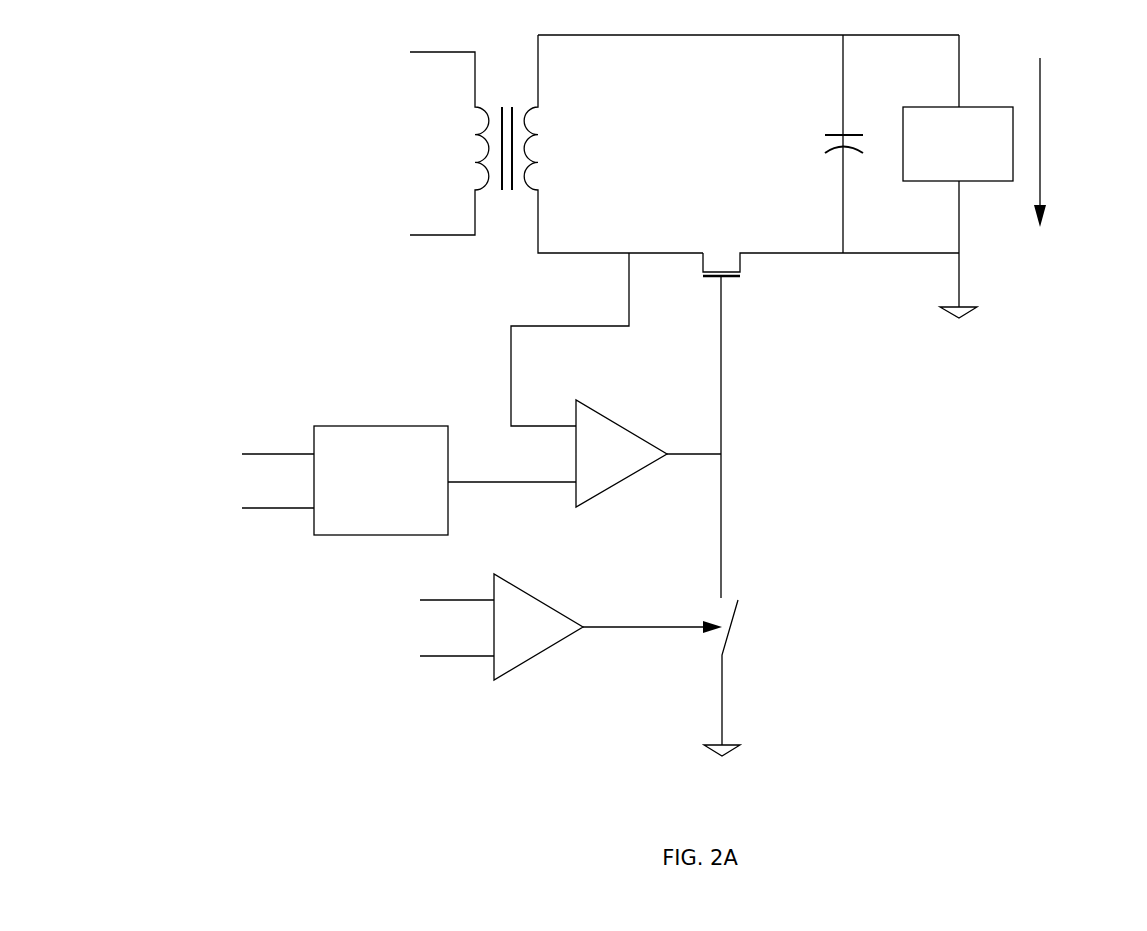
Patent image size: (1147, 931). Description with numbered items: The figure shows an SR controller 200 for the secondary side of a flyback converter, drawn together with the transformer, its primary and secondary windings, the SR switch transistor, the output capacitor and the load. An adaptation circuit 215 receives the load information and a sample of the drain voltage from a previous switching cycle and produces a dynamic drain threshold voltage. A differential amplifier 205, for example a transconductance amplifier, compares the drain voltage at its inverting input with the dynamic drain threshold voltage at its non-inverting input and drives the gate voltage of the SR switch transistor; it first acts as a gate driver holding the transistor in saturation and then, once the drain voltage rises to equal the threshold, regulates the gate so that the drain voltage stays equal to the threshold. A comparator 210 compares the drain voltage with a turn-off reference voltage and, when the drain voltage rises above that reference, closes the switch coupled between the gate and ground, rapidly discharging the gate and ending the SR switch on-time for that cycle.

The SR controller 200 is at (262, 274).
The differential amplifier 205 is at (630, 478).
The comparator 210 is at (545, 654).
The adaptation circuit 215 is at (385, 426).